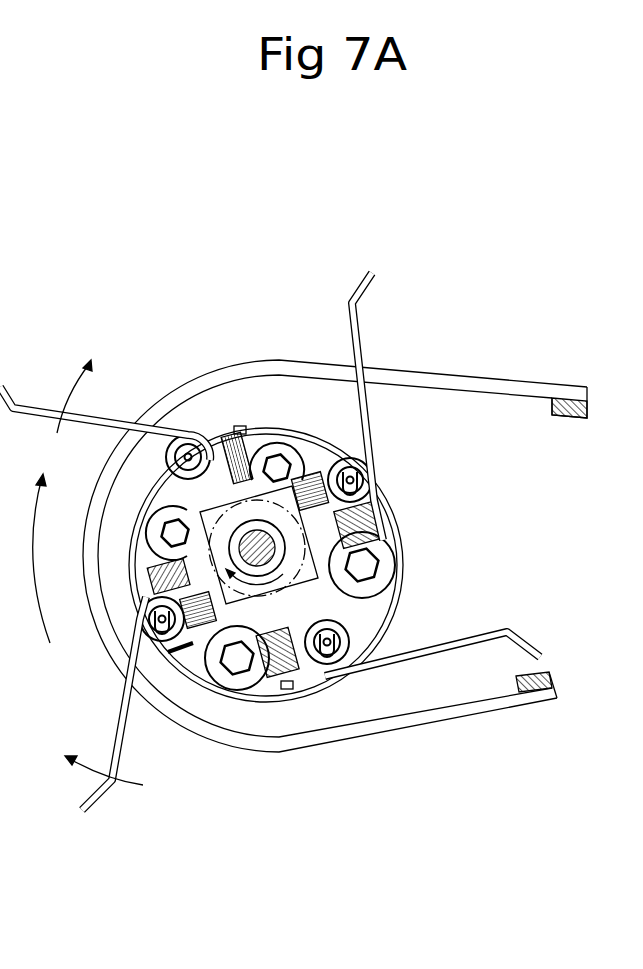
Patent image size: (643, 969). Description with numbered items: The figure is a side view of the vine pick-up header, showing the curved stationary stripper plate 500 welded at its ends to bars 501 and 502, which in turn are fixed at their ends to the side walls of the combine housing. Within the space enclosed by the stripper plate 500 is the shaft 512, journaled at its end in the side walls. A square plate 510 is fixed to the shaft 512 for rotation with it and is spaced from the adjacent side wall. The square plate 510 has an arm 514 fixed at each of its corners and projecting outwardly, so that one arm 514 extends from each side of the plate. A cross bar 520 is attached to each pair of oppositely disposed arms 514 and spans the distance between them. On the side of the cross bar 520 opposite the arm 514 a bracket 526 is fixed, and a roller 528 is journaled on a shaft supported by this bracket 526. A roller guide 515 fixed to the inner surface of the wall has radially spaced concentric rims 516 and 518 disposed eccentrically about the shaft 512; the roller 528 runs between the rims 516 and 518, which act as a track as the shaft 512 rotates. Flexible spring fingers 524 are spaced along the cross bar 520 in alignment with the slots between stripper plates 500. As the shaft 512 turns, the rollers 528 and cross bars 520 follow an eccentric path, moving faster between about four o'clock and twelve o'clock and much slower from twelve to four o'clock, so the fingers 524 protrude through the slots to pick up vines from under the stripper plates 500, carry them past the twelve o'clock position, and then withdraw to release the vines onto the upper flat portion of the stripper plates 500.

The stripper plate 500 is at (360, 740).
The bar 501 is at (552, 418).
The bar 502 is at (552, 672).
The square plate 510 is at (380, 616).
The shaft 512 is at (152, 502).
The arm 514 is at (318, 477).
The roller guide 515 is at (200, 648).
The rim 516 is at (333, 462).
The rim 518 is at (405, 520).
The cross bar 520 is at (320, 665).
The flexible spring finger 524 is at (367, 296).
The bracket 526 is at (374, 556).
The roller 528 is at (173, 662).